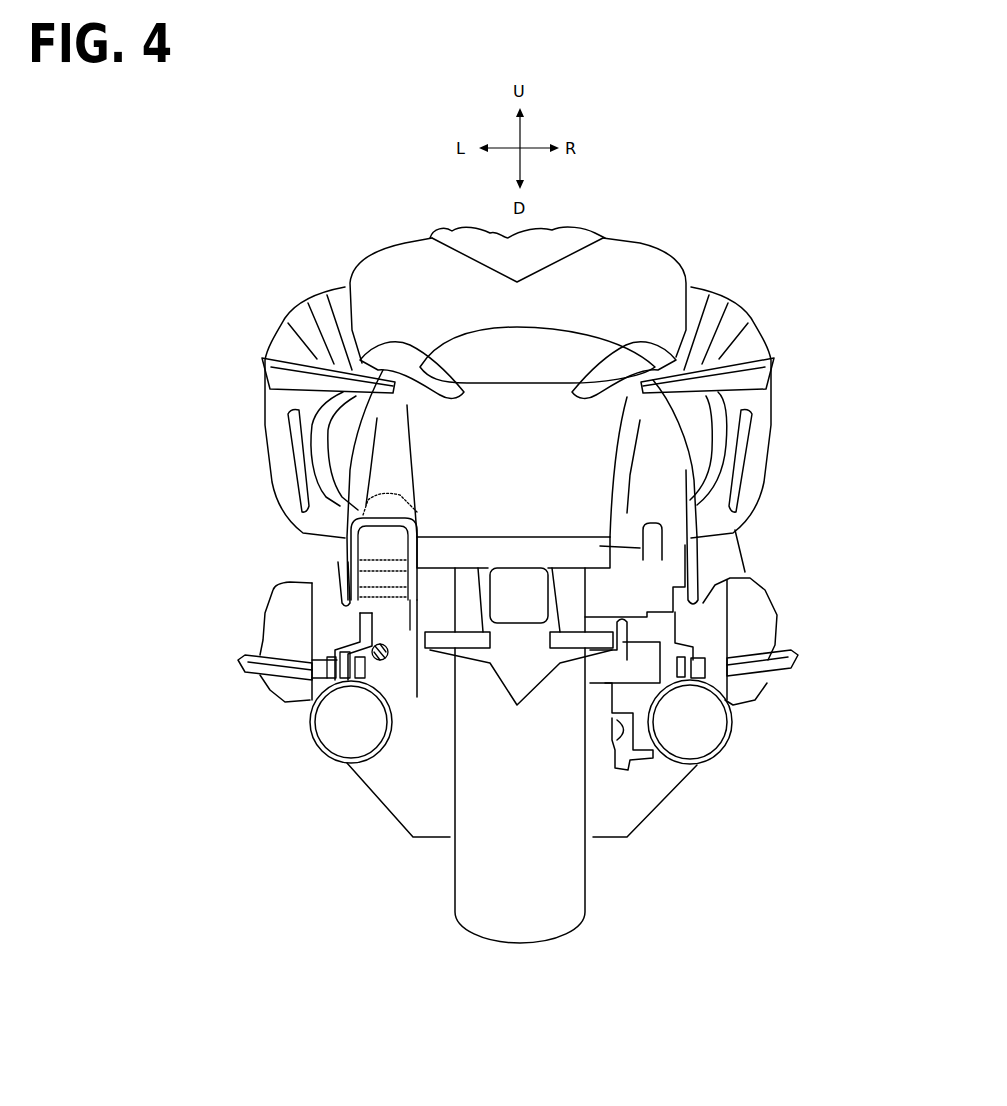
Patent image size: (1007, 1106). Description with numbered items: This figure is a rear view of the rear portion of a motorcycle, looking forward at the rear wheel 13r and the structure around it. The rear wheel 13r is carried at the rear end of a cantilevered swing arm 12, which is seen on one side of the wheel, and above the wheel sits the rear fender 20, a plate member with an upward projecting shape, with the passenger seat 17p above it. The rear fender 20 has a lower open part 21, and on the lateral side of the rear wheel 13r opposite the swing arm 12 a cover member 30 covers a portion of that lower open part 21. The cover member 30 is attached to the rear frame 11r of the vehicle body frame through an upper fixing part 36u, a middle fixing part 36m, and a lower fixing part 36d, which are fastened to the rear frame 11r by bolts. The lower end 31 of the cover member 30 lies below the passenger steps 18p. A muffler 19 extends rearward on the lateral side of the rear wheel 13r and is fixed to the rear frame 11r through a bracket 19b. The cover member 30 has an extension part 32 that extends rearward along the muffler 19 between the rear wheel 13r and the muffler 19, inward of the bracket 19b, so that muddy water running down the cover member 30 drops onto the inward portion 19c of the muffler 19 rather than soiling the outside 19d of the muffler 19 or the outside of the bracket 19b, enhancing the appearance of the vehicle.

The passenger seat 17p is at (570, 338).
The rear fender 20 is at (586, 462).
The rear frame 11r is at (668, 531).
The lower open part 21 is at (590, 546).
The cover member 30 is at (374, 543).
The middle fixing part 36m is at (345, 585).
The upper fixing part 36u is at (405, 500).
The lower fixing part 36d is at (383, 653).
The passenger steps 18p is at (240, 663).
The outside of the muffler 19d is at (308, 727).
The muffler 19 is at (322, 760).
The extension part 32 is at (380, 720).
The bracket 19b is at (402, 682).
The lower end 31 is at (392, 700).
The inward portion of the muffler 19c is at (392, 737).
The rear wheel 13r is at (465, 888).
The swing arm 12 is at (643, 747).